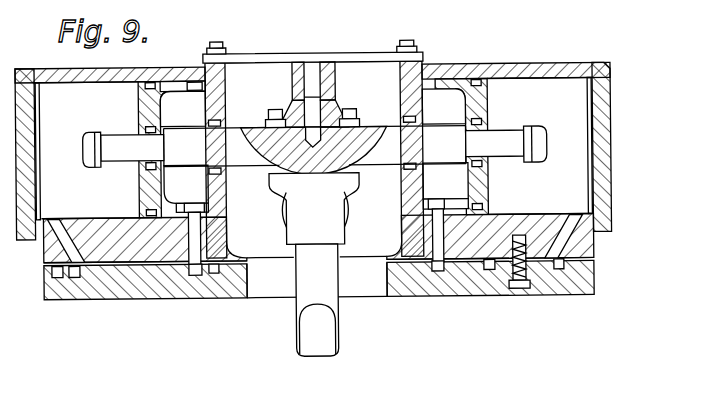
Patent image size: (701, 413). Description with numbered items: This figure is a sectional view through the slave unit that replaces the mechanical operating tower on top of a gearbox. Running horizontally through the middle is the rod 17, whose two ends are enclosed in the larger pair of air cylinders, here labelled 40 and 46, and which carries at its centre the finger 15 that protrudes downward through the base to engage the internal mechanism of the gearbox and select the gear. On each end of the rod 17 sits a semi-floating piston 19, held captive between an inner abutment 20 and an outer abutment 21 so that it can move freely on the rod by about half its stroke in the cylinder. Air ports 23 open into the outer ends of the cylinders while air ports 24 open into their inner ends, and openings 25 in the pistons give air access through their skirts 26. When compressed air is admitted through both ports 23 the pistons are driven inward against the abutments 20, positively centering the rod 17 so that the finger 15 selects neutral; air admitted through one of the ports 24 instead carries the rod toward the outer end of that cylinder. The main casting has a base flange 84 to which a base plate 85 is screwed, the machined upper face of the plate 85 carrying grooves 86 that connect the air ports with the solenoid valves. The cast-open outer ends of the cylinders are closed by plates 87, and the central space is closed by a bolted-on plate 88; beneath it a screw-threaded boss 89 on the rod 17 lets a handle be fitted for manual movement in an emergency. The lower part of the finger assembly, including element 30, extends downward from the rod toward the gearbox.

The finger 15 is at (337, 337).
The rod 17 is at (224, 188).
The semi-floating piston 19 is at (140, 111).
The inner abutment 20 is at (314, 145).
The outer abutment 21 is at (84, 167).
The air port 23 is at (49, 228).
The air port 24 is at (183, 250).
The opening 25 is at (207, 210).
The skirt 26 is at (178, 205).
The connecting rod 30 is at (288, 236).
The left chamber 40 is at (104, 115).
The right chamber 46 is at (568, 115).
The base flange 84 is at (588, 249).
The base plate 85 is at (587, 285).
The grooves 86 is at (72, 279).
The plate 87 is at (28, 144).
The bolted-on plate 88 is at (303, 56).
The screw-threaded boss 89 is at (334, 84).